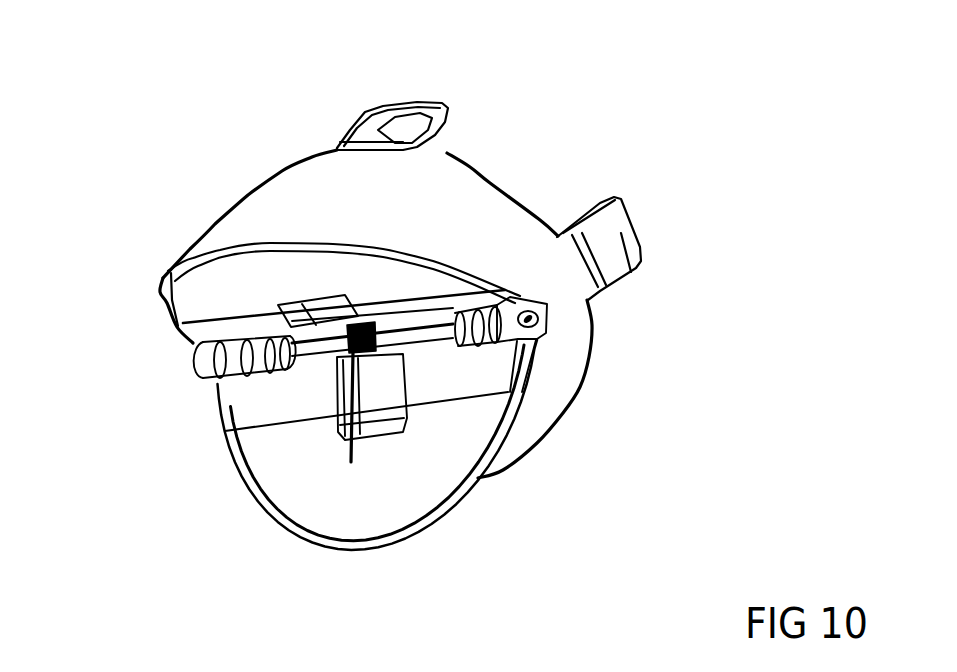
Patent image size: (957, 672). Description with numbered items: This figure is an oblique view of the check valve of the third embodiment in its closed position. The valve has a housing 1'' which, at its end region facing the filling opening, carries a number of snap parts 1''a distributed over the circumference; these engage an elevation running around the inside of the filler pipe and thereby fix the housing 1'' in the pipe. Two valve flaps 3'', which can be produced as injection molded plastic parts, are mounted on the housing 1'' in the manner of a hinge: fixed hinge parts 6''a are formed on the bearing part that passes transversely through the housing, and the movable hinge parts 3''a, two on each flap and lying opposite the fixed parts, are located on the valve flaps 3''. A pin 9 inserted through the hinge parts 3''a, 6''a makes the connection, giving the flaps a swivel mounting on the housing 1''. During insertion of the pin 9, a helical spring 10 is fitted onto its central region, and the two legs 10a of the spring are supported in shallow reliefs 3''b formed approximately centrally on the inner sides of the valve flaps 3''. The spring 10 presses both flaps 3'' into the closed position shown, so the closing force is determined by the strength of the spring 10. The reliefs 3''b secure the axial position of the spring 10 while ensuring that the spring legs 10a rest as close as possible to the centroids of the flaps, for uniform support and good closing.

The housing 1'' is at (400, 245).
The snap part 1''a is at (320, 83).
The valve flap 3'' is at (378, 482).
The movable hinge part 3''a is at (566, 180).
The shallow relief 3''b is at (328, 489).
The fixed hinge part 6''a is at (550, 482).
The pin 9 is at (303, 347).
The helical spring 10 is at (372, 326).
The spring leg 10a is at (313, 288).